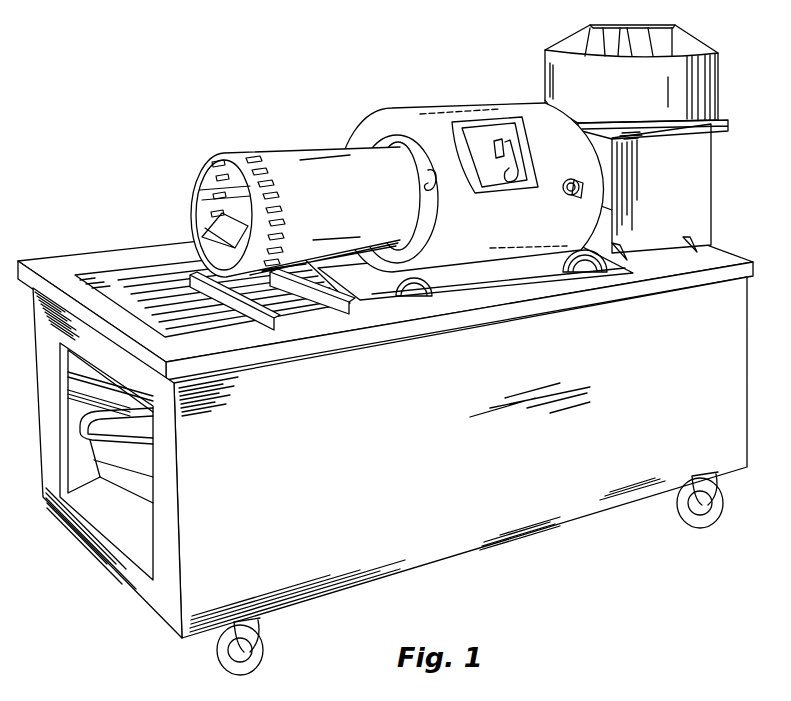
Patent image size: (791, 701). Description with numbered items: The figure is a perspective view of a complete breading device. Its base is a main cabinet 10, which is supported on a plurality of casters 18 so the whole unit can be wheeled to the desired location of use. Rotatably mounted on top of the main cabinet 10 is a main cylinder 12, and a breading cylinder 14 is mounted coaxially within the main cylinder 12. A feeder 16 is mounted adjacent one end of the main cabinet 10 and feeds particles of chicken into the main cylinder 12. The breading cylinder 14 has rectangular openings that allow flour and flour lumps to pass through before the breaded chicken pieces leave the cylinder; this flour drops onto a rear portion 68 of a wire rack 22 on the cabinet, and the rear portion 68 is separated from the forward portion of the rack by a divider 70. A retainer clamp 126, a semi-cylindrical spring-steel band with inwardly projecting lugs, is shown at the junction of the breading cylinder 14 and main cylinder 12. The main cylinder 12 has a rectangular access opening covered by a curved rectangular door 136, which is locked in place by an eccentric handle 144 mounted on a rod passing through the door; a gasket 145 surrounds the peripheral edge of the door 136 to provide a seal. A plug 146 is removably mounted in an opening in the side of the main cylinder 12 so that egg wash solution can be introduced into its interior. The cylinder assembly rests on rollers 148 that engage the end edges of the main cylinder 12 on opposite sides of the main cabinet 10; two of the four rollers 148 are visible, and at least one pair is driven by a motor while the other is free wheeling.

The main cabinet 10 is at (606, 461).
The main cylinder 12 is at (537, 106).
The breading cylinder 14 is at (290, 158).
The feeder 16 is at (720, 70).
The casters 18 is at (263, 642).
The wire rack 22 is at (157, 310).
The rear portion of the wire rack 68 is at (323, 308).
The divider 70 is at (237, 310).
The retainer clamp 126 is at (390, 135).
The curved rectangular door 136 is at (493, 180).
The handle 144 is at (515, 167).
The gasket 145 is at (450, 122).
The plug 146 is at (586, 189).
The rollers 148 is at (412, 290).